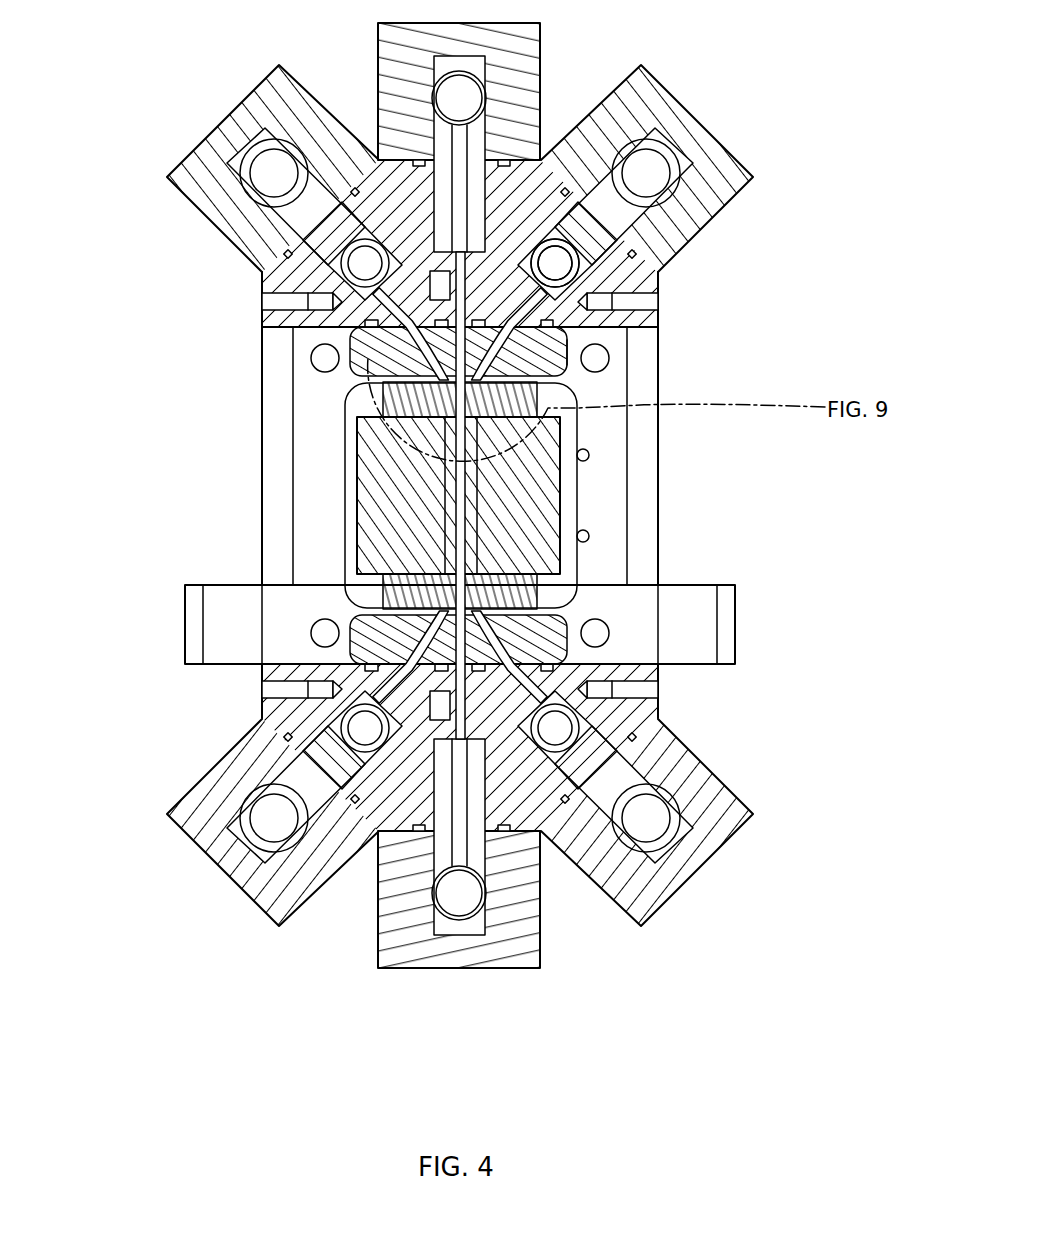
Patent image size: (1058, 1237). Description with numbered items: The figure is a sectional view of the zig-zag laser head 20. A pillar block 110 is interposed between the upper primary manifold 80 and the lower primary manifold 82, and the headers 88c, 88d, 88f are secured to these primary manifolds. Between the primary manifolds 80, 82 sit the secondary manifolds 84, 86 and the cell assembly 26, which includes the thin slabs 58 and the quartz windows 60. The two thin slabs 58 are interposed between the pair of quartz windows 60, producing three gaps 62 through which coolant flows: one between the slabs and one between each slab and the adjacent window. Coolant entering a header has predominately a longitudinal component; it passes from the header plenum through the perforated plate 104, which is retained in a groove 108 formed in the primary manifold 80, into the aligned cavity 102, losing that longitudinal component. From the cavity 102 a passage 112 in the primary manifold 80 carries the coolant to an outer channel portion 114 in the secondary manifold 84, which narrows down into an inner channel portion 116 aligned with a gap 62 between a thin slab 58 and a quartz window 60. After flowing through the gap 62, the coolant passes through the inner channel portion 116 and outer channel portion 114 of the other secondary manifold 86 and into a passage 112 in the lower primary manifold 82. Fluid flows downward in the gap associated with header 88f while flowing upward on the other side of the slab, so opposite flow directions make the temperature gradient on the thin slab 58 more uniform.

The zig-zag laser head 20 is at (828, 320).
The cell assembly 26 is at (575, 511).
The thin slab 58 is at (437, 545).
The quartz window 60 is at (552, 458).
The gap 62 is at (437, 503).
The upper primary manifold 80 is at (492, 292).
The lower primary manifold 82 is at (659, 709).
The secondary manifold 84 is at (350, 378).
The secondary manifold 86 is at (358, 655).
The header 88c is at (653, 87).
The header 88d is at (683, 880).
The header 88f is at (245, 892).
The cavity 102 is at (307, 294).
The plate 104 is at (675, 236).
The groove 108 is at (333, 258).
The pillar block 110 is at (706, 621).
The passage 112 is at (567, 345).
The outer channel portion 114 is at (440, 328).
The inner channel portion 116 is at (383, 382).